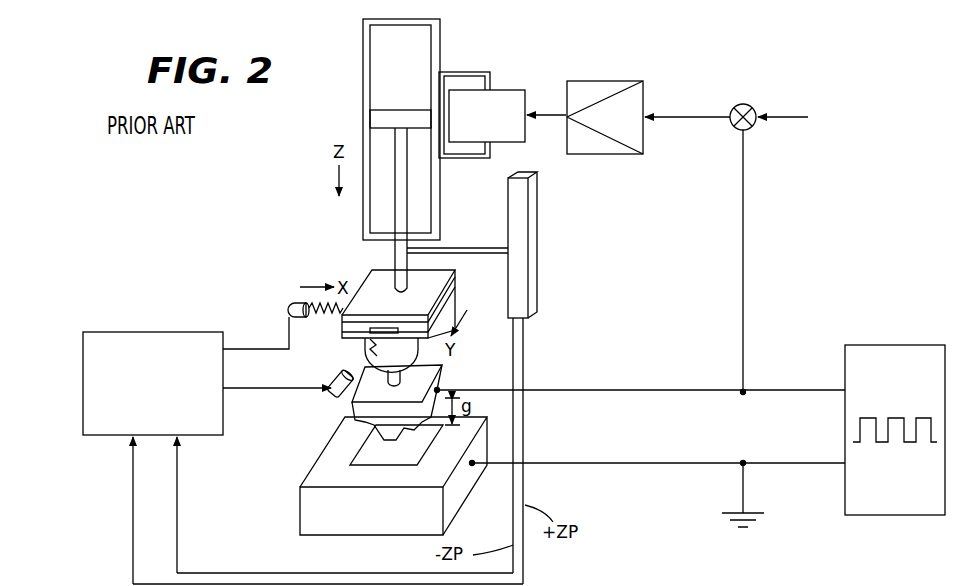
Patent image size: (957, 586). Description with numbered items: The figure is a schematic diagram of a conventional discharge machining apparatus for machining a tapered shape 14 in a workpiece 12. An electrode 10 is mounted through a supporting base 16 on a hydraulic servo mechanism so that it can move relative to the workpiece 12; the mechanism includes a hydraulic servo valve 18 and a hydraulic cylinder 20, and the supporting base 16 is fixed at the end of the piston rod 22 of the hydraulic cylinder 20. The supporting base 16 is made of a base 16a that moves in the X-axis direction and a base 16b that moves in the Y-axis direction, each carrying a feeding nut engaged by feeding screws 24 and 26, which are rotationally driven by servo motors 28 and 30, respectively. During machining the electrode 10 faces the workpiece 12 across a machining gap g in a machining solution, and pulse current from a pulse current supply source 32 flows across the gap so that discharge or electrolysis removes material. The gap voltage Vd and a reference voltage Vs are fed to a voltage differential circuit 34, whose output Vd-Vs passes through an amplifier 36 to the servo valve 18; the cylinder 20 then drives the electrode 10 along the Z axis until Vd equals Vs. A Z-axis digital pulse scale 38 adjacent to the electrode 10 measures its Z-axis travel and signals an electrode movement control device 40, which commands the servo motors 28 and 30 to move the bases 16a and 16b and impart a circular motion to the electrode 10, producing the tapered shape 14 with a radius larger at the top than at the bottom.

The electrode 10 is at (442, 364).
The workpiece 12 is at (342, 528).
The tapered shape 14 is at (363, 450).
The supporting base 16 is at (411, 284).
The X-axis table 16a is at (455, 278).
The Y-axis table 16b is at (455, 303).
The hydraulic servo valve 18 is at (510, 90).
The hydraulic cylinder 20 is at (422, 43).
The piston rod 22 is at (402, 200).
The feeding screw 24 is at (323, 314).
The feeding screw 26 is at (363, 350).
The servo motor 28 is at (290, 303).
The servo motor 30 is at (330, 394).
The pulse current supply source 32 is at (895, 515).
The voltage differential circuit 34 is at (745, 104).
The amplifier 36 is at (597, 81).
The Z-axis digital pulse scale 38 is at (520, 210).
The electrode movement control device 40 is at (106, 436).